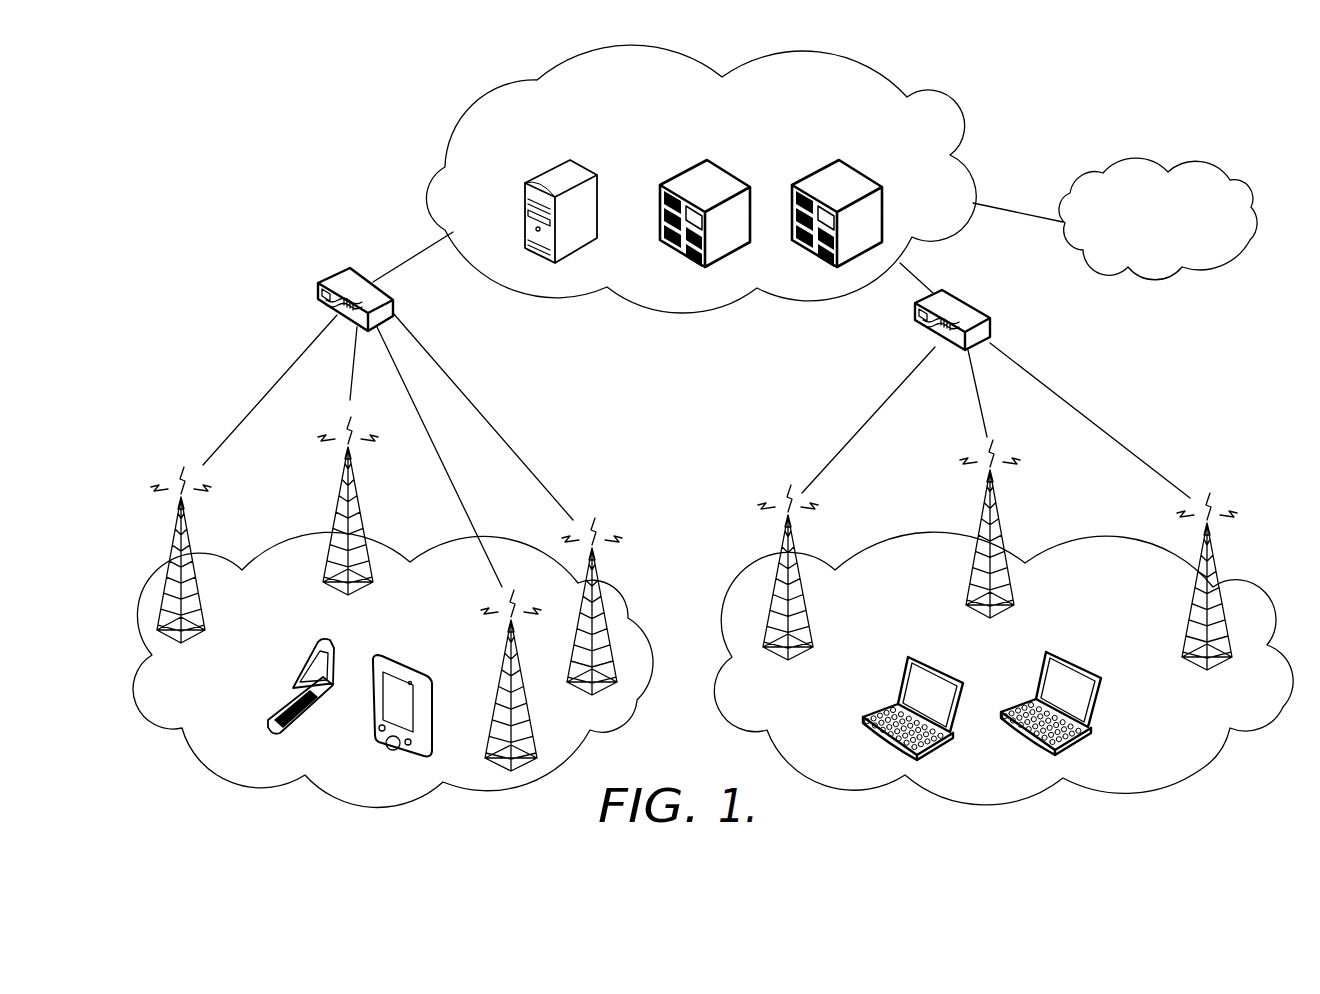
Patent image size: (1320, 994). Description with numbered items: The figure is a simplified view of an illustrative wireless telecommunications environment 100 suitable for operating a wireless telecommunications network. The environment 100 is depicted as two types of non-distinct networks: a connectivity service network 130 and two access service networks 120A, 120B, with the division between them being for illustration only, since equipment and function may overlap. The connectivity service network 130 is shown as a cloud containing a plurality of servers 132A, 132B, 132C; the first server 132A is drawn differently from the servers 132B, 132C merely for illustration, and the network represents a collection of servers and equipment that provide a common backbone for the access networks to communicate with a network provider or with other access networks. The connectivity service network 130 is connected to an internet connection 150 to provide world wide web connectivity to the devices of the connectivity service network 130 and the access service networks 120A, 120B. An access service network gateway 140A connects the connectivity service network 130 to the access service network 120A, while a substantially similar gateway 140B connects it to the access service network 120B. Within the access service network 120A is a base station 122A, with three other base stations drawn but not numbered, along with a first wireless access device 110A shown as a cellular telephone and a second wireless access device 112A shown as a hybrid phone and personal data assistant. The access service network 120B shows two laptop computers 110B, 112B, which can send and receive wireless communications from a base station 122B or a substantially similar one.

The environment 100 is at (166, 172).
The connectivity service network 130 is at (443, 130).
The server 132A is at (537, 173).
The server 132B is at (677, 173).
The server 132C is at (810, 173).
The internet connection 150 is at (1200, 160).
The access service network gateway 140A is at (328, 271).
The ASN gateway 140B is at (973, 303).
The access service network 120A is at (373, 805).
The access service network 120B is at (1032, 802).
The base station 122A is at (192, 643).
The base station 122B is at (800, 657).
The first wireless access device 110A is at (320, 637).
The second wireless access device 112A is at (413, 660).
The laptop computer 110B is at (940, 670).
The laptop computer 112B is at (1078, 661).